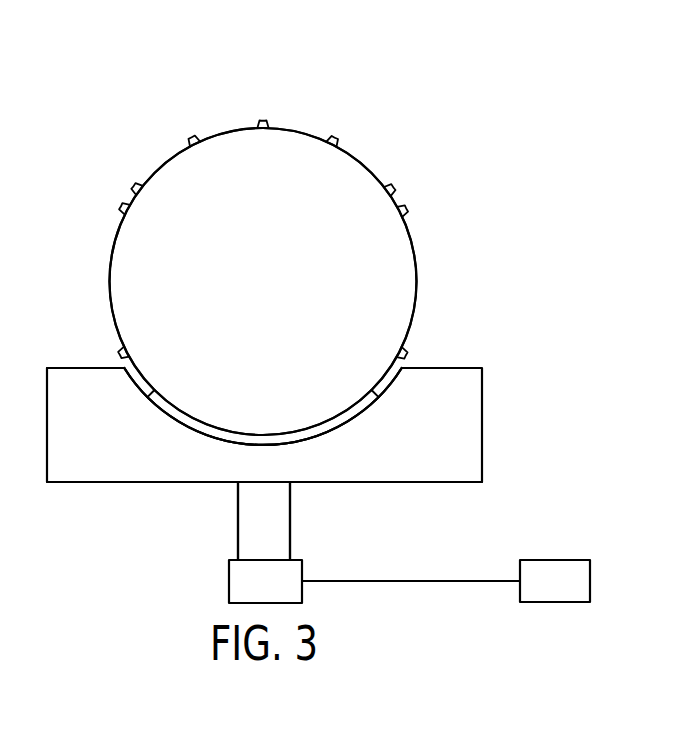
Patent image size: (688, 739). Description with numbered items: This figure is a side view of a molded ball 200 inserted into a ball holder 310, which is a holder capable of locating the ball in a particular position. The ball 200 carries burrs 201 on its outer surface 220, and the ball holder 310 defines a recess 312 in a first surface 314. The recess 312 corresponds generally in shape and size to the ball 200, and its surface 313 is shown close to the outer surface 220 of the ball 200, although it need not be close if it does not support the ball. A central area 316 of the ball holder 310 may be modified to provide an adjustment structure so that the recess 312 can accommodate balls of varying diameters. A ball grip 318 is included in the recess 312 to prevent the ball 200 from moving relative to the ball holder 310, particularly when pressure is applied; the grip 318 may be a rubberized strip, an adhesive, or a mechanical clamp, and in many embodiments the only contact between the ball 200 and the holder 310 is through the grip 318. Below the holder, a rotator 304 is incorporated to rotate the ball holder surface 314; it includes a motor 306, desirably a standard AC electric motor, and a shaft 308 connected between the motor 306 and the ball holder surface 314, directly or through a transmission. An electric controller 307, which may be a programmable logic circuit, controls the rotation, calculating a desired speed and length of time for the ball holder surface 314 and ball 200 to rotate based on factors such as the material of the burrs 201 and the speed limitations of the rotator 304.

The ball 200 is at (309, 101).
The burrs 201 is at (336, 136).
The outer surface 220 is at (417, 245).
The ball holder 310 is at (493, 405).
The first surface 314 is at (73, 367).
The recess 312 is at (352, 421).
The surface 313 is at (203, 433).
The ball grip 318 is at (385, 377).
The central area 316 is at (287, 461).
The shaft 308 is at (291, 535).
The rotator 304 is at (225, 540).
The motor 306 is at (303, 593).
The electric controller 307 is at (555, 559).